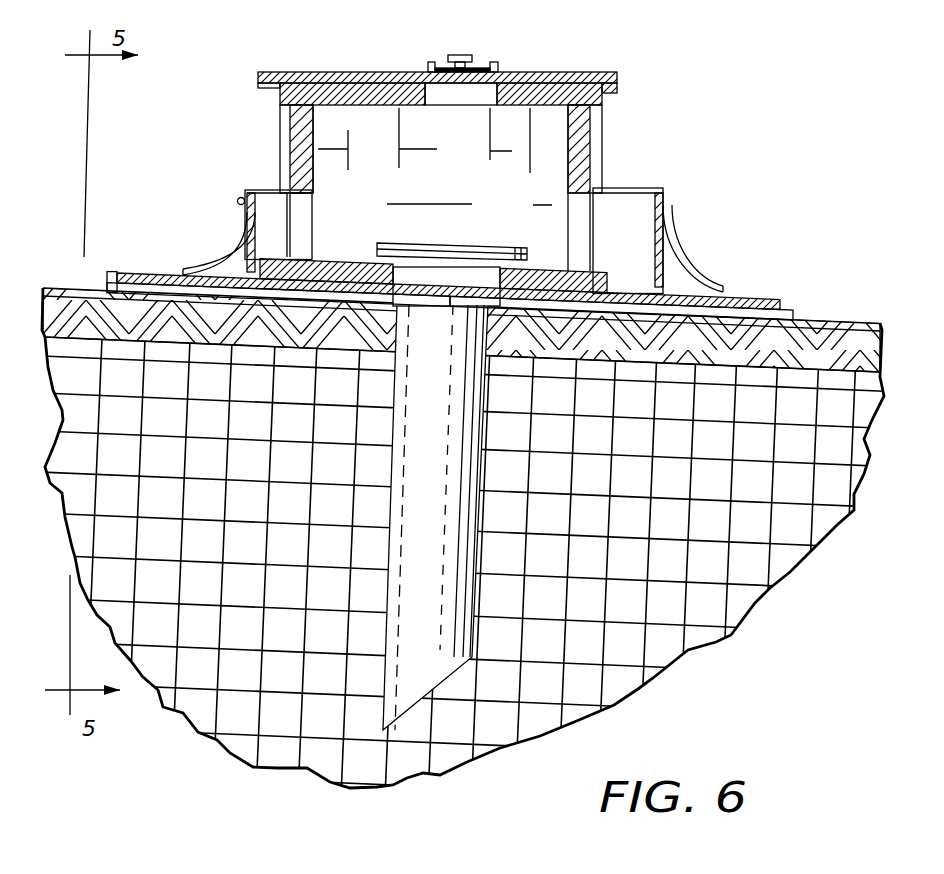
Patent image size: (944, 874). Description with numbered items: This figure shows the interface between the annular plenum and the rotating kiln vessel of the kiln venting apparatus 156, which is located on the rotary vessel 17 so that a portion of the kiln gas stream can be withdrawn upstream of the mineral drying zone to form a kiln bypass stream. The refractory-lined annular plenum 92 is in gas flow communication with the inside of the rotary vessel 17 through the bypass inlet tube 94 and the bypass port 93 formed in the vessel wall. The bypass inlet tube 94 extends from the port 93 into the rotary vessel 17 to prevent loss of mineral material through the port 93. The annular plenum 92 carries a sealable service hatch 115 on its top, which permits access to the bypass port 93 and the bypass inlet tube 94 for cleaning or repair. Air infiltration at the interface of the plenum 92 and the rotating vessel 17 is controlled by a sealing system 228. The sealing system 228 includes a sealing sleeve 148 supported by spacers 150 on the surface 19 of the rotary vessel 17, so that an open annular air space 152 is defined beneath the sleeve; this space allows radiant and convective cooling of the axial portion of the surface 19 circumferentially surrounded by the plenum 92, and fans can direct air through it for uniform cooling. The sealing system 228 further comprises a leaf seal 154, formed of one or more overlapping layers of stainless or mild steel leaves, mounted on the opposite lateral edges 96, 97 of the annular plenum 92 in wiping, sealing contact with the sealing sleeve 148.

The rotary vessel 17 is at (73, 289).
The surface of rotary vessel 19 is at (757, 298).
The annular plenum 92 is at (603, 130).
The bypass port 93 is at (474, 247).
The bypass inlet tube 94 is at (440, 644).
The lateral edge of annular plenum 96 is at (287, 226).
The lateral edge of annular plenum 97 is at (662, 243).
The sealable service hatch 115 is at (478, 66).
The sealing sleeve 148 is at (760, 298).
The spacers 150 is at (728, 303).
The annular air space 152 is at (152, 280).
The leaf seal 154 is at (210, 263).
The kiln venting apparatus 156 is at (648, 82).
The sealing system 228 is at (203, 227).